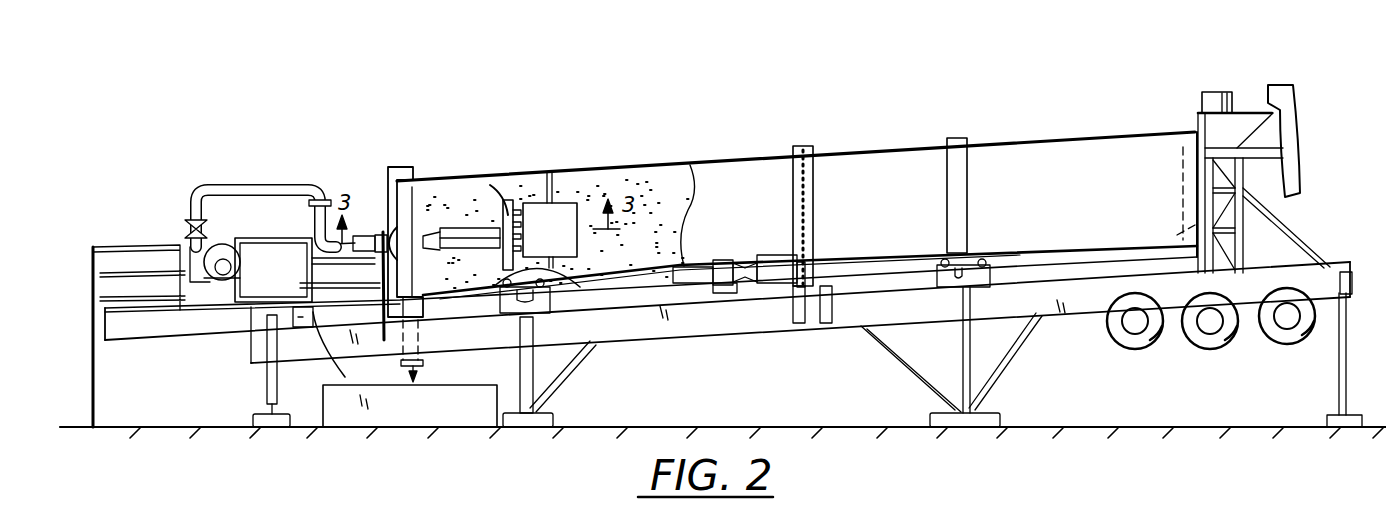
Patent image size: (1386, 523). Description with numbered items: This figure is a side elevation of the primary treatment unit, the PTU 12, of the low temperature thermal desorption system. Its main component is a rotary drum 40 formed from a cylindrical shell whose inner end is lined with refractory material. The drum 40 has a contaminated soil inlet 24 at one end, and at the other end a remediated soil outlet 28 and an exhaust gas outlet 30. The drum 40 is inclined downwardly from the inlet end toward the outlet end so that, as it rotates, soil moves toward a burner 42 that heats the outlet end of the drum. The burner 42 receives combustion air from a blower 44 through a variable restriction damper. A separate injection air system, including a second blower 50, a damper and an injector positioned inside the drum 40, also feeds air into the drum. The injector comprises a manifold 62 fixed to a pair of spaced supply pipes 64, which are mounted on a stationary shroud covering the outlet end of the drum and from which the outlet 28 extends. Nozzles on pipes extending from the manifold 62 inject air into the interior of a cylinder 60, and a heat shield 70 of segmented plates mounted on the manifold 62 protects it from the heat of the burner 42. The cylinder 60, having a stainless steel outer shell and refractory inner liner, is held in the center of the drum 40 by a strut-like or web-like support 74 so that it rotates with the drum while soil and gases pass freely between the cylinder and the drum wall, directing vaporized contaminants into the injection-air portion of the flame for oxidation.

The primary treatment unit 12 is at (703, 194).
The contaminated soil inlet 24 is at (1248, 104).
The remediated soil outlet 28 is at (423, 363).
The exhaust gas outlet 30 is at (1200, 95).
The rotary drum 40 is at (920, 144).
The burner 42 is at (381, 231).
The blower 44 is at (205, 290).
The blower 50 is at (347, 350).
The cylinder 60 is at (594, 170).
The manifold 62 is at (498, 196).
The supply pipes 64 is at (480, 250).
The heat shield 70 is at (507, 200).
The support 74 is at (553, 200).